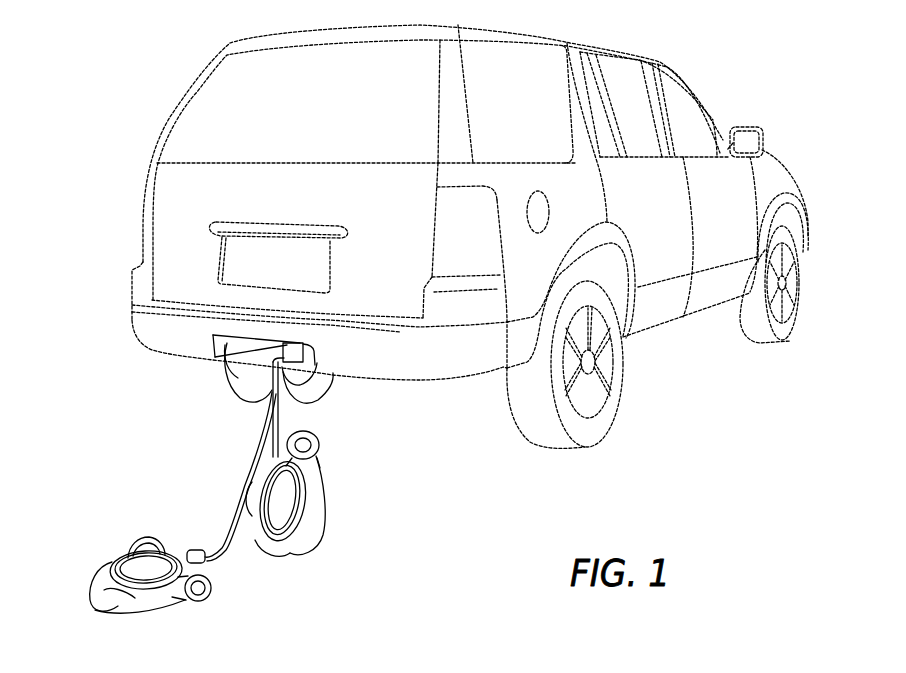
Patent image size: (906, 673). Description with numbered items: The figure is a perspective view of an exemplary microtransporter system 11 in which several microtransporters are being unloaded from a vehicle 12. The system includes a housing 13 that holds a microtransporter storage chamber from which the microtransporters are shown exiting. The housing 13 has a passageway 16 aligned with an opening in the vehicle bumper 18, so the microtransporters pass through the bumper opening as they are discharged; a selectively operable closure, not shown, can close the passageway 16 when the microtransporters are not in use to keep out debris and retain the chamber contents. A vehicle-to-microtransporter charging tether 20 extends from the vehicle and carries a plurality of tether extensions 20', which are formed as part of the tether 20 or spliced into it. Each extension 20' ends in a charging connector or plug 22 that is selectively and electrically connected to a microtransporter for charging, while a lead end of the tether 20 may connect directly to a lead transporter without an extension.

The microtransporter system 11 is at (151, 384).
The vehicle 12 is at (620, 50).
The housing 13 is at (265, 363).
The passageway 16 is at (227, 362).
The vehicle bumper 18 is at (402, 380).
The vehicle-to-microtransporter charging tether 20 is at (224, 476).
The tether extension 20' is at (318, 407).
The charging connector 22 is at (193, 548).